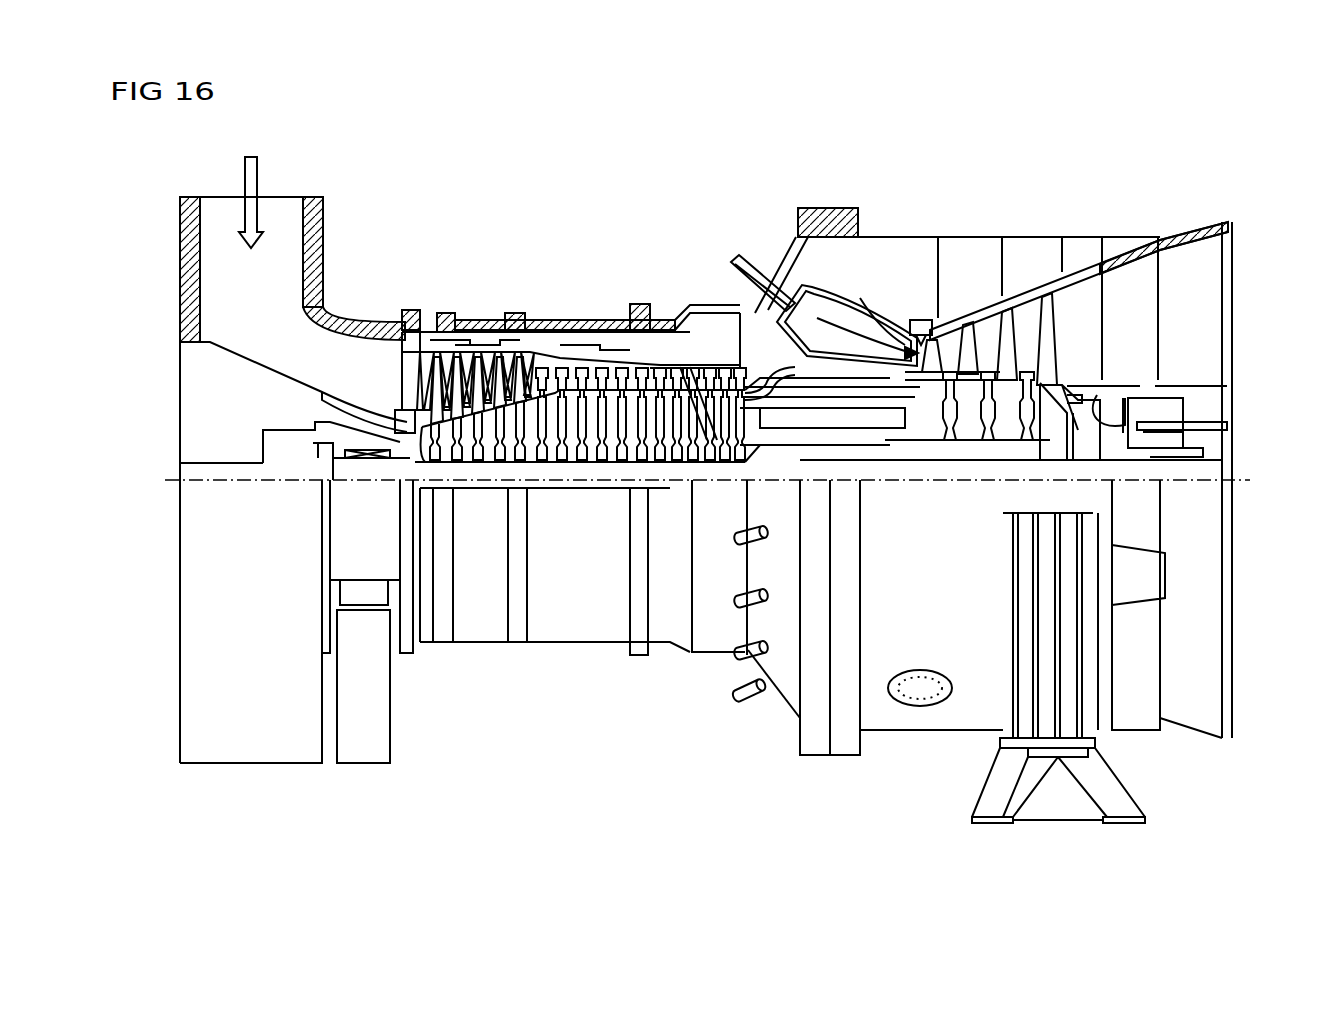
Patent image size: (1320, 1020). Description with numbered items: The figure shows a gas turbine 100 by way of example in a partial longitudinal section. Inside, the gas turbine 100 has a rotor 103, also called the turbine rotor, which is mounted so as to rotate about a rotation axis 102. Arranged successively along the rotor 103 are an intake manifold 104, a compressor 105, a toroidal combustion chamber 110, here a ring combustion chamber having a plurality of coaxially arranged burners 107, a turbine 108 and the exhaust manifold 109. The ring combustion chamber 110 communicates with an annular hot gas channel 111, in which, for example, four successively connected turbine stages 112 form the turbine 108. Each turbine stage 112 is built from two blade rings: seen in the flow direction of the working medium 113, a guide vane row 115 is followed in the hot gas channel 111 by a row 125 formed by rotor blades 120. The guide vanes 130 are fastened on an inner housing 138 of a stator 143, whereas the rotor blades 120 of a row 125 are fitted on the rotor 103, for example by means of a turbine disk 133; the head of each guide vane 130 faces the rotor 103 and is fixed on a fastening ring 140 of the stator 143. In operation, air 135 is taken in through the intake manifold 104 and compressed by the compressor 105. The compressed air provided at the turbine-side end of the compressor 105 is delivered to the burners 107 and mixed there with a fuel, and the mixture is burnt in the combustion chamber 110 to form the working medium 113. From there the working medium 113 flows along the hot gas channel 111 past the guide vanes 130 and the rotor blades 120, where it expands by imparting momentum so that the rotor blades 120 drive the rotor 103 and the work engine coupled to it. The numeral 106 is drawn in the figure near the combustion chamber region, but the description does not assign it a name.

The gas turbine 100 is at (563, 200).
The rotation axis 102 is at (170, 480).
The rotor 103 is at (770, 447).
The intake manifold 104 is at (318, 258).
The compressor 105 is at (490, 300).
The combustion chamber 106 is at (848, 330).
The burners 107 is at (745, 265).
The turbine 108 is at (938, 200).
The exhaust manifold 109 is at (1143, 232).
The toroidal combustion chamber 110 is at (830, 303).
The hot gas channel 111 is at (1070, 318).
The turbine stages 112 is at (1055, 200).
The working medium 113 is at (828, 305).
The guide vane row 115 is at (1022, 262).
The rotor blades 120 is at (990, 400).
The row 125 is at (1075, 240).
The guide vanes 130 is at (968, 350).
The turbine disk 133 is at (1047, 445).
The air 135 is at (262, 188).
The inner housing 138 is at (968, 270).
The fastening ring 140 is at (917, 375).
The stator 143 is at (905, 255).